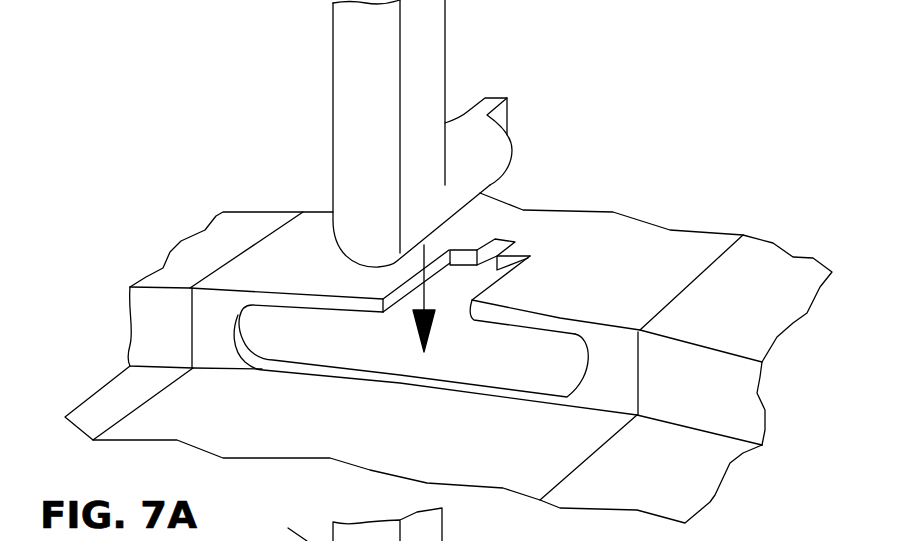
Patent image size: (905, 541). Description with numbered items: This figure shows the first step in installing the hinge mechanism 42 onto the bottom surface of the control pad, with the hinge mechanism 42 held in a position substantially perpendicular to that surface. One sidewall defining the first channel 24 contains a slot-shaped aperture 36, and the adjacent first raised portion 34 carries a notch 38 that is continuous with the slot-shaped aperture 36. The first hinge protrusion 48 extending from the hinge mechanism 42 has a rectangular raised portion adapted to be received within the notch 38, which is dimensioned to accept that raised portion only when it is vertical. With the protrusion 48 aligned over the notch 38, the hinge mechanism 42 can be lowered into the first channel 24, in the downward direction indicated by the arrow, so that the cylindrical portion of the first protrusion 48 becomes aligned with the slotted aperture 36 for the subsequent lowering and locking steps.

The first channel 24 is at (262, 432).
The first raised portion 34 is at (622, 284).
The slot-shaped aperture 36 is at (453, 380).
The notch 38 is at (503, 240).
The hinge mechanism 42 is at (358, 107).
The first hinge protrusion 48 is at (500, 153).